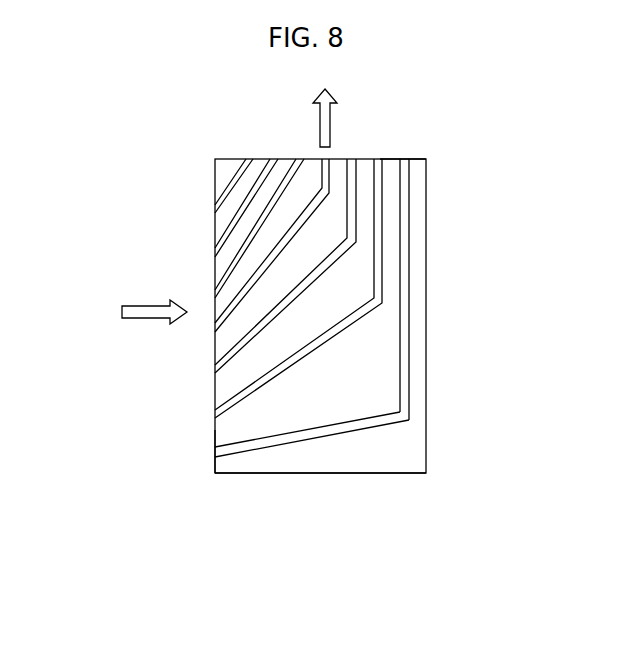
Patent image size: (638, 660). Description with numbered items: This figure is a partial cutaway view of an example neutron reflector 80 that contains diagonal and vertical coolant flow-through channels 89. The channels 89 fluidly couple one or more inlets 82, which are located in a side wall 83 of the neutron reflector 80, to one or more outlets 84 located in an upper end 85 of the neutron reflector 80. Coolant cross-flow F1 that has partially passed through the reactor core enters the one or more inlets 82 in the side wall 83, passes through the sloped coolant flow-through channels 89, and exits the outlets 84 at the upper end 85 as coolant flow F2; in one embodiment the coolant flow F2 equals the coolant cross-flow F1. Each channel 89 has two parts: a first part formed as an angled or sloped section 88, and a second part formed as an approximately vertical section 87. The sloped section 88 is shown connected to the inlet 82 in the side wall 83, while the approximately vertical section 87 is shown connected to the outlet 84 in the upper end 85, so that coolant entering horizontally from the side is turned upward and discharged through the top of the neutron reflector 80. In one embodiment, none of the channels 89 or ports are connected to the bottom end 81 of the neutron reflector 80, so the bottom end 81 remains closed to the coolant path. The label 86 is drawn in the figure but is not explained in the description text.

The neutron reflector 80 is at (467, 190).
The bottom end 81 is at (357, 482).
The inlets 82 is at (210, 453).
The side wall 83 is at (207, 278).
The outlets 84 is at (400, 152).
The upper end 85 is at (290, 152).
The top-left channel 86 is at (227, 183).
The approximately vertical section 87 is at (397, 353).
The angled or sloped section 88 is at (308, 428).
The coolant flow-through channels 89 is at (347, 450).
The coolant cross-flow F1 is at (115, 308).
The coolant flow F2 is at (303, 108).